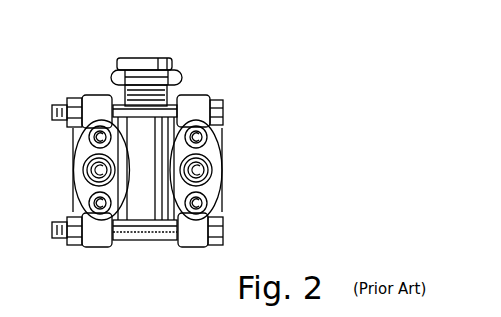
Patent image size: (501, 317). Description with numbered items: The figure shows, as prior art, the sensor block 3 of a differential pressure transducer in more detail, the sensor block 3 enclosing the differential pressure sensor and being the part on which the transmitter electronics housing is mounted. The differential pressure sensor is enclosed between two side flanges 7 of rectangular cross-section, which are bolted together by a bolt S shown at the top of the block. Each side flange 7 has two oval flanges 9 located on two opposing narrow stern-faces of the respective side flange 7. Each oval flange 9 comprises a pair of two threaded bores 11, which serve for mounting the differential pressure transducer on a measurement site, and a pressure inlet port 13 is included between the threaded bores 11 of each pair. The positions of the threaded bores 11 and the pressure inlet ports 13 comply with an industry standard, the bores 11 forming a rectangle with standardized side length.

The sensor block 3 is at (243, 69).
The bolt / screw S is at (198, 104).
The side flange 7 is at (100, 235).
The oval flange 9 is at (78, 152).
The threaded bore 11 is at (80, 133).
The pressure inlet port 13 is at (76, 179).